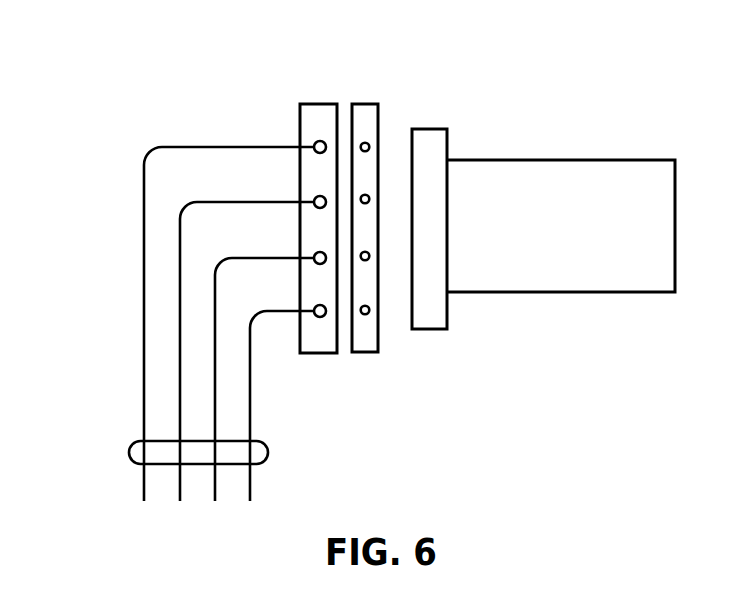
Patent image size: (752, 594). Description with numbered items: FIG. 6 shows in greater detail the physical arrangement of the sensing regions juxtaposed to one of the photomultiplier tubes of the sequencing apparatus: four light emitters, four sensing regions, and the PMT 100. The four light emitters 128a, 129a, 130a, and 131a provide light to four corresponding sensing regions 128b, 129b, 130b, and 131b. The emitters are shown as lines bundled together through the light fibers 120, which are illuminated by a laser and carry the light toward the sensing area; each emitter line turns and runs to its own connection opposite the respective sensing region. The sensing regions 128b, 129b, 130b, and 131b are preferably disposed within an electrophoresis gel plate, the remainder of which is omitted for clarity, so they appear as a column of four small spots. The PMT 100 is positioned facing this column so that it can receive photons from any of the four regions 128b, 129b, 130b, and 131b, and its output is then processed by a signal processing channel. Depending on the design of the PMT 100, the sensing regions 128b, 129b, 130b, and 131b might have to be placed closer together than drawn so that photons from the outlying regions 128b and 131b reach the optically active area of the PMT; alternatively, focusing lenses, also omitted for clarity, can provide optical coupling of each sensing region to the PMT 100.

The photomultiplier tube 100 is at (573, 160).
The light fibers 120 is at (268, 452).
The light emitter 128a is at (178, 147).
The light emitter 129a is at (200, 201).
The light emitter 130a is at (233, 257).
The light emitter 131a is at (263, 310).
The sensing region 128b is at (368, 143).
The sensing region 129b is at (368, 196).
The sensing region 130b is at (368, 260).
The sensing region 131b is at (368, 315).